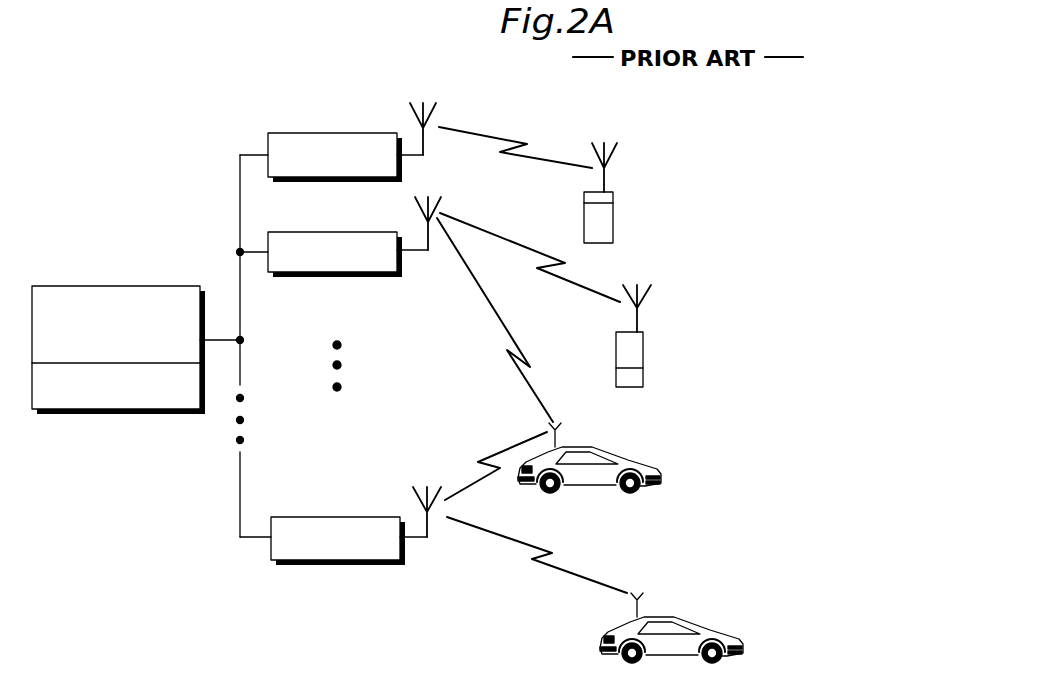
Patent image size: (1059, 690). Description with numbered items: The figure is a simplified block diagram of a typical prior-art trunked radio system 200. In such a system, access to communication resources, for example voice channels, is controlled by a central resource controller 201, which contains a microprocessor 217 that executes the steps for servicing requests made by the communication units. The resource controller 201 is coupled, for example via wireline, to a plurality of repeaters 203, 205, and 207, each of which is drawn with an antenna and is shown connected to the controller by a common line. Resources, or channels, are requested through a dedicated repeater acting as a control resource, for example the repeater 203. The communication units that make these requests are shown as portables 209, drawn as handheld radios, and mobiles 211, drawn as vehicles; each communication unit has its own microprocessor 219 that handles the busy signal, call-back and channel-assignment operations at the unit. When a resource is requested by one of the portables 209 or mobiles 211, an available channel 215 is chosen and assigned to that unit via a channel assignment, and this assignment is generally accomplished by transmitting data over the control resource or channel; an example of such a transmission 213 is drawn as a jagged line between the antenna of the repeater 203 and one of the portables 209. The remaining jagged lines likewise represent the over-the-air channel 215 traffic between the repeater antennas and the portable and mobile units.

The trunked radio system 200 is at (433, 64).
The resource controller 201 is at (152, 286).
The repeater 203 is at (297, 133).
The repeater 205 is at (327, 232).
The repeater 207 is at (345, 517).
The portables 209 is at (613, 212).
The mobiles 211 is at (598, 487).
The transmission 213 is at (496, 137).
The channel 215 is at (611, 304).
The microprocessor 217 is at (133, 398).
The microprocessor 219 is at (632, 373).